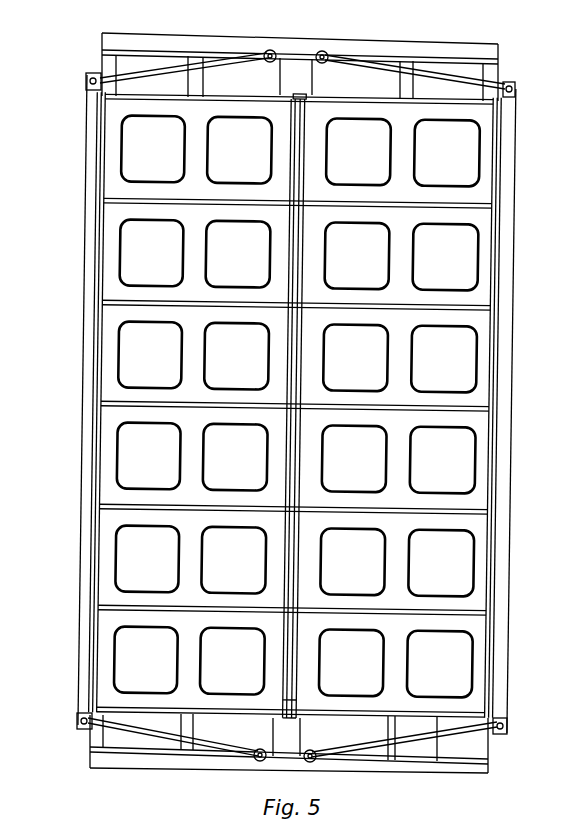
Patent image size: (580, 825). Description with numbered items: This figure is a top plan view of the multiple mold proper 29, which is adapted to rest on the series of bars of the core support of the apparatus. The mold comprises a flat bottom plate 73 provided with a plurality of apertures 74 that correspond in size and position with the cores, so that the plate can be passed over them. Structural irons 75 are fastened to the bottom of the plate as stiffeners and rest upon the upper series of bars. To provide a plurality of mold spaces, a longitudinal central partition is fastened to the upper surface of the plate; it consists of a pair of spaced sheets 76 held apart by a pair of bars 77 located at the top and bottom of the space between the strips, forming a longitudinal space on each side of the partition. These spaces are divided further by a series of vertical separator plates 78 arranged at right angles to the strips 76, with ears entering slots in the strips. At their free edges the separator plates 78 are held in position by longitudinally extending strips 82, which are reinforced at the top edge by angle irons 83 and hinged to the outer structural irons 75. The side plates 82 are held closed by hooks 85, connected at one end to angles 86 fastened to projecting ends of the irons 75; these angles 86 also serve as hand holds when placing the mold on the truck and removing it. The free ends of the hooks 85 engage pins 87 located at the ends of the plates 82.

The mold proper 29 is at (541, 514).
The flat bottom plate 73 is at (466, 630).
The apertures 74 is at (458, 342).
The structural irons 75 is at (180, 742).
The spaced sheets 76 is at (282, 690).
The bars 77 is at (304, 110).
The vertical separator plates 78 is at (351, 716).
The longitudinally extending strips 82 is at (97, 370).
The angle irons 83 is at (579, 455).
The hooks 85 is at (437, 740).
The angles 86 is at (160, 44).
The pins 87 is at (82, 717).